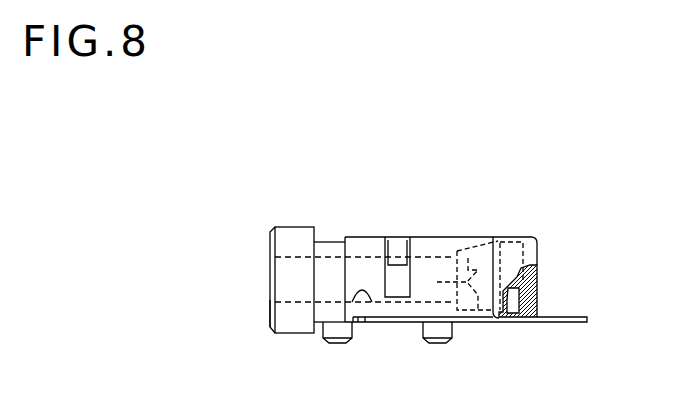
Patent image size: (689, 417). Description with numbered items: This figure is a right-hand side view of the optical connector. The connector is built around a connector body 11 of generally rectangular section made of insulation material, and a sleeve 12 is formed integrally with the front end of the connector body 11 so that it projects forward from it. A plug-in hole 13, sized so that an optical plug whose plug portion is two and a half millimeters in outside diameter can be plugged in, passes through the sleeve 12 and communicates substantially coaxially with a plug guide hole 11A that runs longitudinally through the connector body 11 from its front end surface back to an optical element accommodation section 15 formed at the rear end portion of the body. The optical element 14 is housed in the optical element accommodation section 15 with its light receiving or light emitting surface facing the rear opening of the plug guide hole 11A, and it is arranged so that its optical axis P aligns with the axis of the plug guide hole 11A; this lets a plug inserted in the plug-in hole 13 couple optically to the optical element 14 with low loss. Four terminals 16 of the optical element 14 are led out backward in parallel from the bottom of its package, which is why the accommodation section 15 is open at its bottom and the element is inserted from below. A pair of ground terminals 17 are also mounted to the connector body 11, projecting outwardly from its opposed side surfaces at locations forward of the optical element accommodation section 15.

The connector body 11 is at (387, 222).
The plug guide hole 11A is at (372, 302).
The sleeve 12 is at (289, 227).
The plug-in hole 13 is at (281, 302).
The optical element 14 is at (480, 246).
The optical element accommodation section 15 is at (513, 313).
The terminals 16 is at (566, 323).
The ground terminals 17 is at (423, 322).
The optical axis P is at (448, 282).